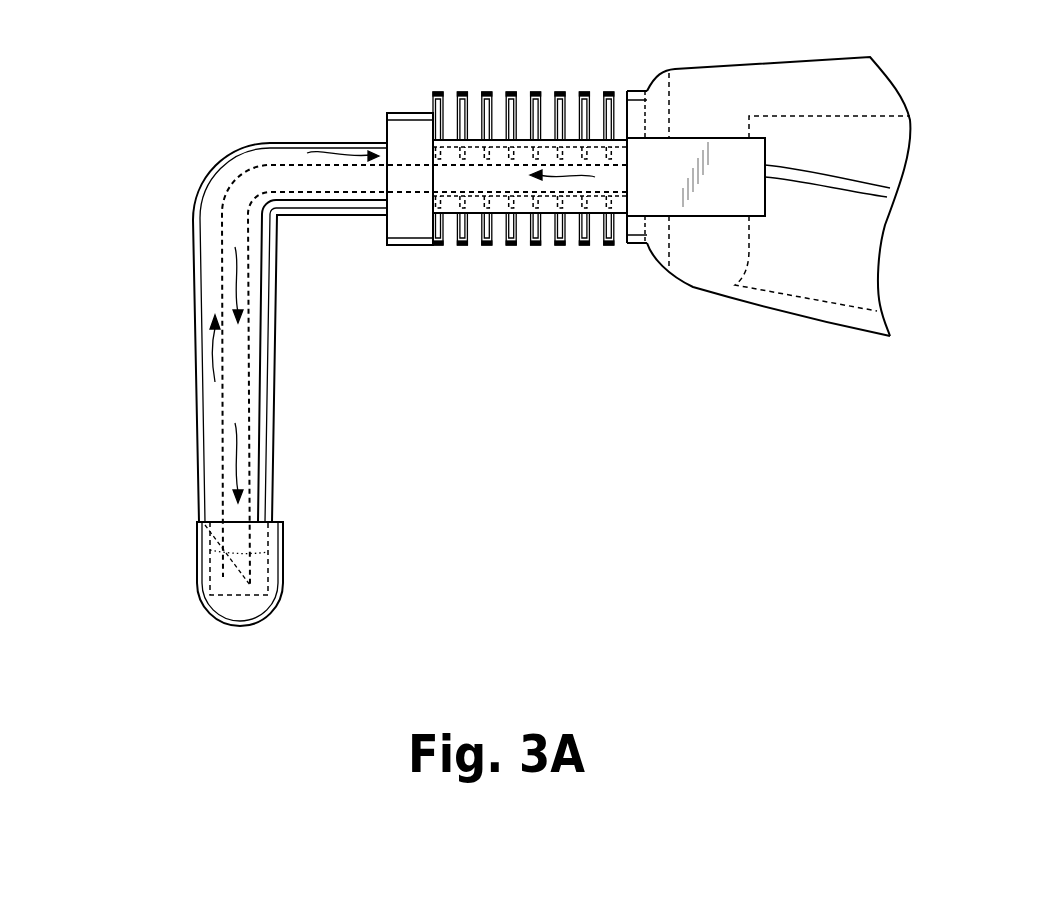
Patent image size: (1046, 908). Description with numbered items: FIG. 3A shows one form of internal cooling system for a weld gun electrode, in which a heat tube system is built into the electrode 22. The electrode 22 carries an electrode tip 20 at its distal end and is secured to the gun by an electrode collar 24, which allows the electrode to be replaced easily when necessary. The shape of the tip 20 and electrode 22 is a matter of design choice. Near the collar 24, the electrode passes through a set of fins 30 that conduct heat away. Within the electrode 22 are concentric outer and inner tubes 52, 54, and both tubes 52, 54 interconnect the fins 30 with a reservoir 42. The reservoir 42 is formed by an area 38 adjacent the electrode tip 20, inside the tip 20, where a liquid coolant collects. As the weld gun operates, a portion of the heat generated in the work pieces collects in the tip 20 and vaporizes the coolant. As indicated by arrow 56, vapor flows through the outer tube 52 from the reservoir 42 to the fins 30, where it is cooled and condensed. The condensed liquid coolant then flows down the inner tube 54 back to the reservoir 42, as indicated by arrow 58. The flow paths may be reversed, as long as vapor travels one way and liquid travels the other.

The electrode tip 20 is at (283, 585).
The electrode 22 is at (277, 272).
The electrode collar 24 is at (387, 115).
The fins 30 is at (503, 97).
The area adjacent the electrode tips 38 is at (212, 580).
The reservoir 42 is at (203, 522).
The outer tube 52 is at (243, 402).
The inner tube 54 is at (267, 409).
The arrow indicating vapor flow 56 is at (215, 345).
The arrow indicating liquid flow 58 is at (243, 296).